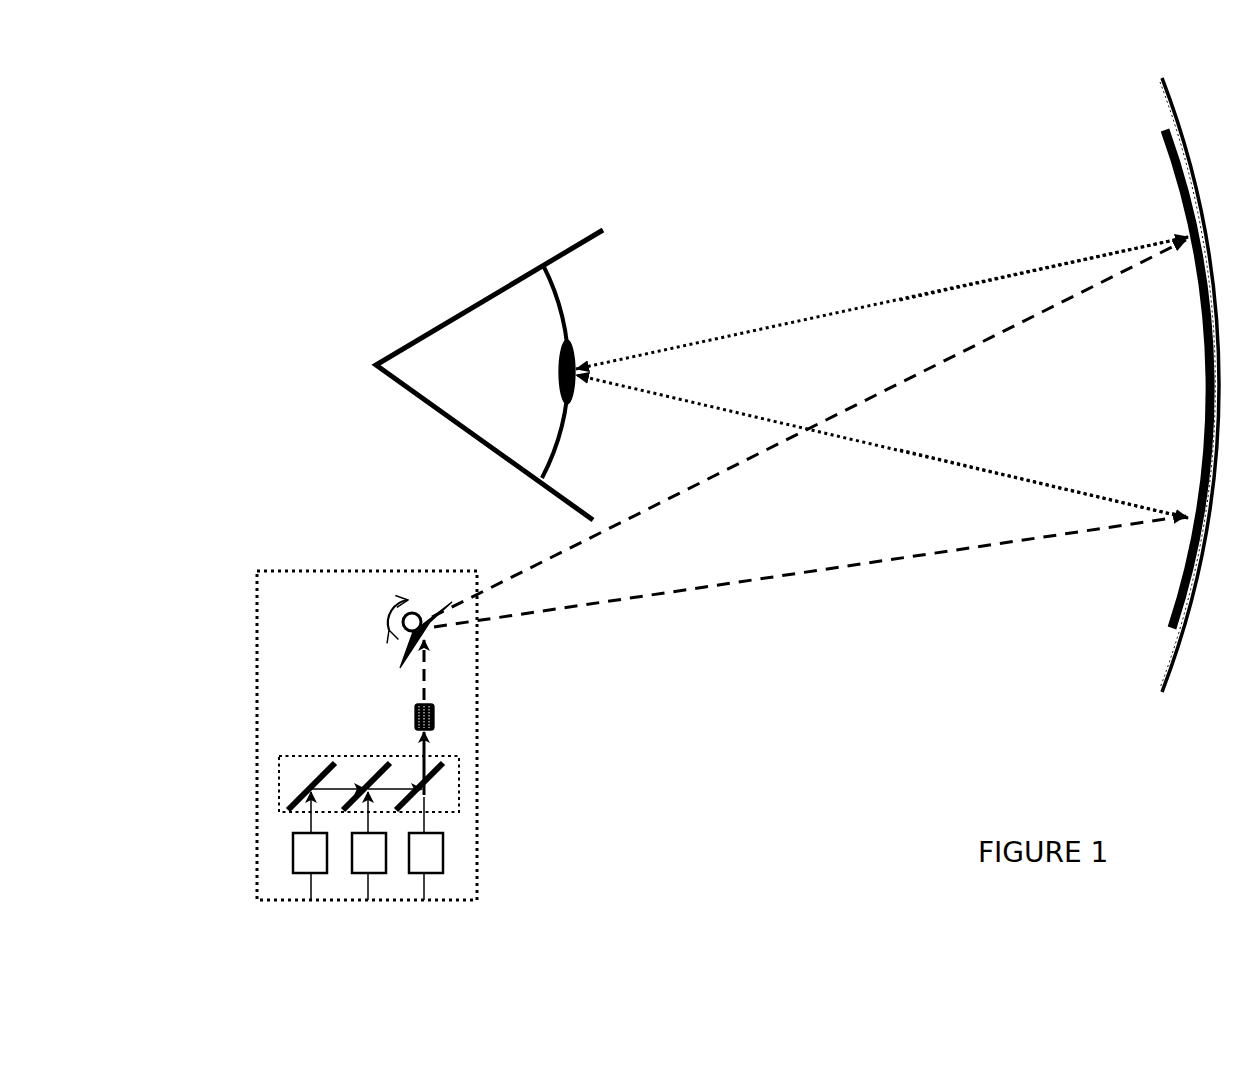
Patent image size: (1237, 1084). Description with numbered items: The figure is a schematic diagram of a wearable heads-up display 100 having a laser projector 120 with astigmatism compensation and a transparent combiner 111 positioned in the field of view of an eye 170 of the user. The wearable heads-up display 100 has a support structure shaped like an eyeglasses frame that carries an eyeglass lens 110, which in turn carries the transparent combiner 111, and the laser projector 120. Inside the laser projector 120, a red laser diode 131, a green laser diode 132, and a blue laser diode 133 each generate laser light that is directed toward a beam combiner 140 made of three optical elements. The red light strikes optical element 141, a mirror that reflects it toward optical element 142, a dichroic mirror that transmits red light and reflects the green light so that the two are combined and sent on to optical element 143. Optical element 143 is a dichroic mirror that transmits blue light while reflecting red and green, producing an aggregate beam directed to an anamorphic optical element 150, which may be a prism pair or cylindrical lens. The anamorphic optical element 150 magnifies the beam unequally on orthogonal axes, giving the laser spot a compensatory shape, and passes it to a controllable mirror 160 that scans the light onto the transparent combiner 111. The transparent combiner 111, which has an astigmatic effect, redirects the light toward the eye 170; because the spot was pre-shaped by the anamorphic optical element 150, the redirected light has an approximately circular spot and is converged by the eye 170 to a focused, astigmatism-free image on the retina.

The wearable heads-up display 100 is at (1095, 656).
The eyeglass lens 110 is at (1172, 104).
The transparent combiner 111 is at (1183, 197).
The laser projector 120 is at (299, 597).
The red laser diode 131 is at (310, 861).
The green laser diode 132 is at (368, 861).
The blue laser diode 133 is at (425, 863).
The beam combiner 140 is at (460, 763).
The optical element 141 is at (296, 799).
The optical element 142 is at (380, 771).
The optical element 143 is at (406, 806).
The anamorphic optical element 150 is at (437, 716).
The controllable mirror 160 is at (400, 633).
The eye 170 is at (503, 376).